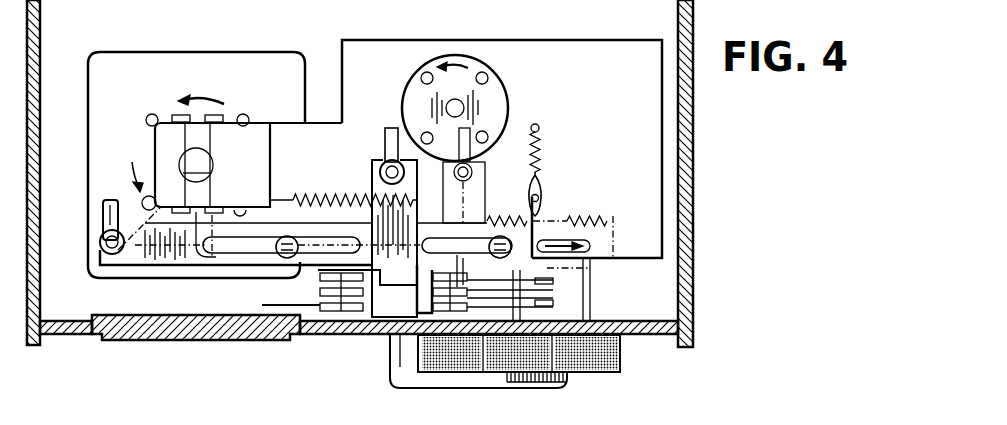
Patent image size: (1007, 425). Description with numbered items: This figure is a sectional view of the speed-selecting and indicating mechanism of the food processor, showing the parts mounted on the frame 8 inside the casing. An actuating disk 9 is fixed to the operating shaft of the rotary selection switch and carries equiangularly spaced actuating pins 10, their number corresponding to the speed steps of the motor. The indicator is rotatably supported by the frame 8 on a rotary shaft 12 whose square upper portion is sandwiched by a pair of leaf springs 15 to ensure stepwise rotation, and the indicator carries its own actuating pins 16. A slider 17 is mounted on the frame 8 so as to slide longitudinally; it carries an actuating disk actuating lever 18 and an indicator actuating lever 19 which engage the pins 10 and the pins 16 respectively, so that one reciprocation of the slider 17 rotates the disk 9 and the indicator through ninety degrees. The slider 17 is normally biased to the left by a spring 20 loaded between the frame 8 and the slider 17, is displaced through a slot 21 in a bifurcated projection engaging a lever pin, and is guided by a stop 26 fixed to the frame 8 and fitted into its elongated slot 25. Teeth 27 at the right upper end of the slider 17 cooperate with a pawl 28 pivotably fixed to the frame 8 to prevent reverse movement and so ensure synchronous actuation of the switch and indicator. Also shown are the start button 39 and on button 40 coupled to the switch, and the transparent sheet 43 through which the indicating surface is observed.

The frame 8 is at (646, 136).
The actuating disk 9 is at (410, 94).
The actuating pins 10 is at (481, 73).
The rotary shaft 12 is at (188, 169).
The leaf springs 15 is at (190, 162).
The actuating pins 16 is at (152, 114).
The slider 17 is at (397, 255).
The actuating disk actuating lever 18 is at (386, 140).
The indicator actuating lever 19 is at (100, 204).
The spring 20 is at (331, 195).
The slot 21 is at (441, 278).
The elongated slot 25 is at (235, 246).
The stop 26 is at (278, 257).
The teeth 27 is at (497, 218).
The pawl 28 is at (544, 200).
The start button 39 is at (592, 374).
The on button 40 is at (550, 372).
The transparent sheet 43 is at (142, 340).